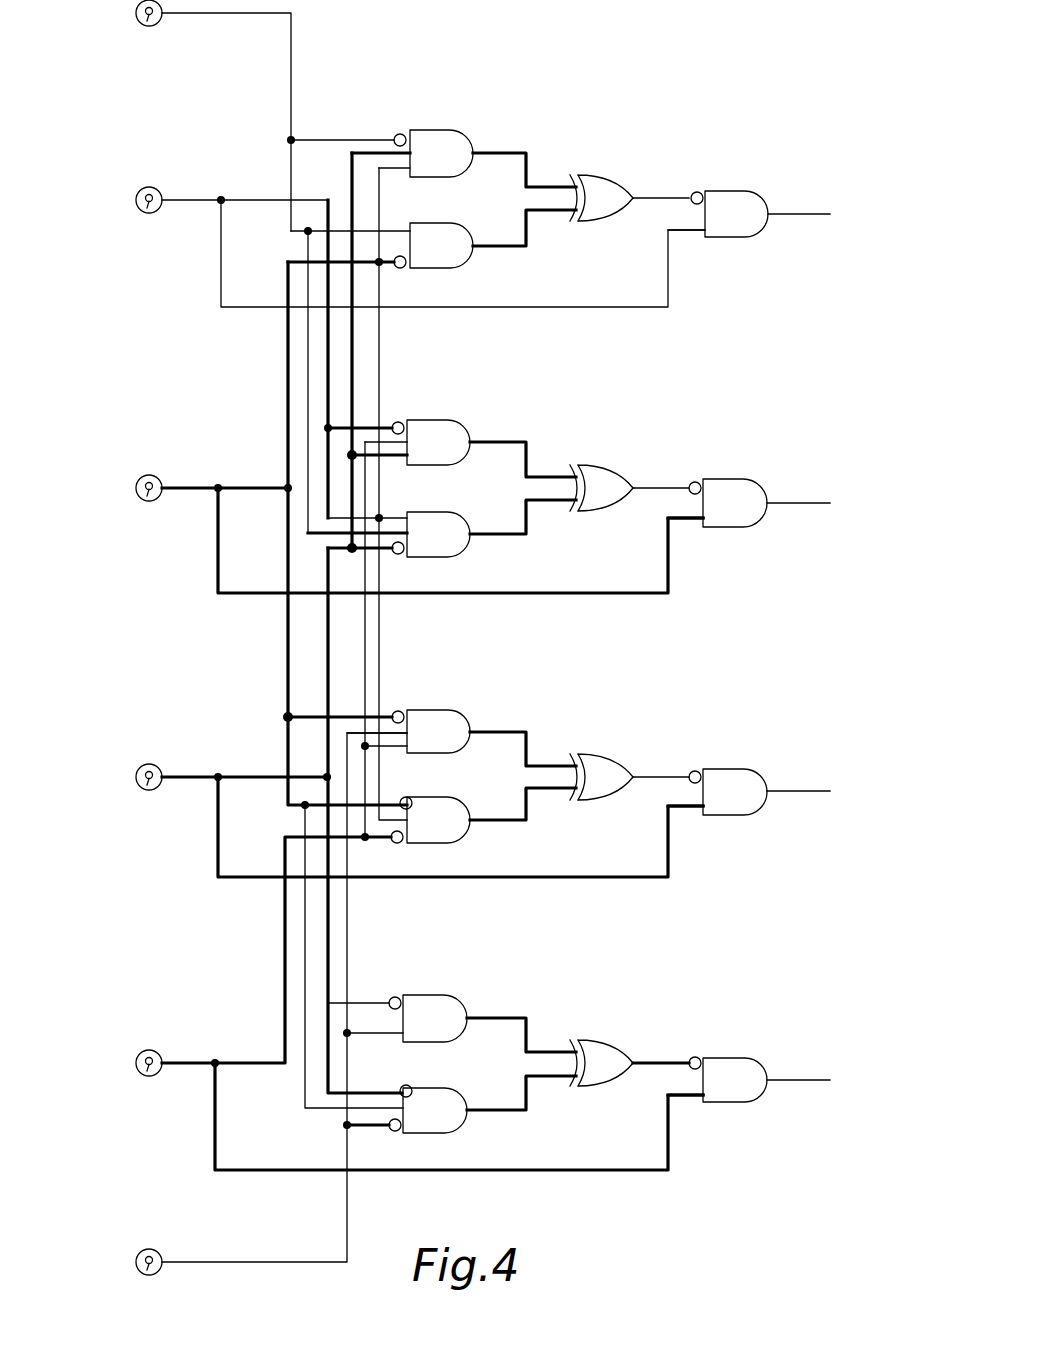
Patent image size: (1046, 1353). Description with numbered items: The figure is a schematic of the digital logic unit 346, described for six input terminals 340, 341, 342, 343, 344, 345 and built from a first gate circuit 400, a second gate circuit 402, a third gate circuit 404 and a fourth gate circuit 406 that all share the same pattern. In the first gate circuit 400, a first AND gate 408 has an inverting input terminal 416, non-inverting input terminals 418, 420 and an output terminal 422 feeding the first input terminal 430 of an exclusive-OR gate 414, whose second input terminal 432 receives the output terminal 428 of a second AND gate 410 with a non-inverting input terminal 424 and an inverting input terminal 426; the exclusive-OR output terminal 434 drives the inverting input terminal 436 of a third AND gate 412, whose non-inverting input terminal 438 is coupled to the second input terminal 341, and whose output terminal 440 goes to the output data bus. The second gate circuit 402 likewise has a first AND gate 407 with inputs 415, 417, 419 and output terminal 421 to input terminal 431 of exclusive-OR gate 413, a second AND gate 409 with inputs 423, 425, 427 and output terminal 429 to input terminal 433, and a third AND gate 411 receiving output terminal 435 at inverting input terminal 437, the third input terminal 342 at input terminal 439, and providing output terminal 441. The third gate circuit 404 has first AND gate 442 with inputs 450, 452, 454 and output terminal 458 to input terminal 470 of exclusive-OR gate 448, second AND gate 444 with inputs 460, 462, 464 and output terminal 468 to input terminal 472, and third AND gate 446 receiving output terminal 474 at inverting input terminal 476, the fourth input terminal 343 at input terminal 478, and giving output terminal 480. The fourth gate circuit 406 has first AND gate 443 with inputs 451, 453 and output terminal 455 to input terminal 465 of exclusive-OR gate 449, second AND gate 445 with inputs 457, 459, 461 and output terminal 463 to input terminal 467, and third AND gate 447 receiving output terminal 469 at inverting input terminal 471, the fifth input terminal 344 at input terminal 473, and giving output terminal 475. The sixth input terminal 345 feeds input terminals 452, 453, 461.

The first input terminal 340 is at (138, 22).
The second input terminal 341 is at (138, 209).
The third input terminal 342 is at (138, 497).
The fourth input terminal 343 is at (138, 786).
The fifth input terminal 344 is at (138, 1072).
The sixth input terminal 345 is at (138, 1271).
The digital logic unit 346 is at (112, 632).
The first gate circuit 400 is at (800, 188).
The second gate circuit 402 is at (802, 475).
The third gate circuit 404 is at (800, 765).
The fourth gate circuit 406 is at (795, 1065).
The first AND gate 407 is at (450, 422).
The first AND gate 408 is at (462, 138).
The second AND gate 409 is at (450, 522).
The second AND gate 410 is at (462, 235).
The third AND gate 411 is at (735, 488).
The third AND gate 412 is at (735, 198).
The exclusive-OR gate 413 is at (605, 482).
The first exclusive-OR gate 414 is at (605, 192).
The first inverting input terminal 415 is at (394, 422).
The first inverting input terminal 416 is at (396, 134).
The second non-inverting input terminal 417 is at (420, 440).
The second non-inverting input terminal 418 is at (422, 148).
The third non-inverting input terminal 419 is at (416, 460).
The third non-inverting input terminal 420 is at (420, 172).
The output terminal 421 is at (475, 440).
The first output terminal 422 is at (473, 160).
The first non-inverting input terminal 423 is at (412, 516).
The first non-inverting input terminal 424 is at (418, 268).
The second non-inverting input terminal 425 is at (412, 555).
The second inverting input terminal 426 is at (398, 270).
The third inverting input terminal 427 is at (398, 556).
The output terminal 428 is at (474, 247).
The output terminal 429 is at (474, 538).
The first input terminal 430 is at (580, 172).
The first input terminal 431 is at (575, 476).
The second input terminal 432 is at (580, 218).
The second input terminal 433 is at (580, 508).
The output terminal 434 is at (630, 205).
The output terminal 435 is at (630, 494).
The first inverting input terminal 436 is at (700, 192).
The first inverting input terminal 437 is at (699, 482).
The second non-inverting input terminal 438 is at (710, 237).
The second non-inverting input terminal 439 is at (710, 526).
The output terminal 440 is at (772, 216).
The output terminal 441 is at (770, 504).
The first AND gate 442 is at (455, 722).
The first AND gate 443 is at (448, 1000).
The second AND gate 444 is at (450, 815).
The second AND gate 445 is at (448, 1108).
The third AND gate 446 is at (738, 780).
The third AND gate 447 is at (738, 1070).
The exclusive-OR gate 448 is at (605, 772).
The exclusive-OR gate 449 is at (605, 1060).
The first inverting input terminal 450 is at (396, 710).
The first inverting input terminal 451 is at (390, 998).
The second non-inverting input terminal 452 is at (424, 728).
The second non-inverting input terminal 453 is at (416, 1040).
The third non-inverting input terminal 454 is at (418, 750).
The output terminal 455 is at (470, 1024).
The first non-inverting input terminal 457 is at (410, 1086).
The output terminal 458 is at (472, 738).
The second non-inverting input terminal 459 is at (410, 1128).
The first non-inverting input terminal 460 is at (412, 797).
The third inverting input terminal 461 is at (395, 1133).
The second non-inverting input terminal 462 is at (414, 833).
The output terminal 463 is at (472, 1113).
The third inverting input terminal 464 is at (398, 845).
The first input terminal 465 is at (575, 1048).
The second input terminal 467 is at (580, 1084).
The output terminal 468 is at (474, 826).
The output terminal 469 is at (630, 1068).
The first input terminal 470 is at (575, 762).
The first inverting input terminal 471 is at (699, 1057).
The second input terminal 472 is at (580, 794).
The second non-inverting input terminal 473 is at (710, 1102).
The output terminal 474 is at (630, 783).
The output terminal 475 is at (770, 1082).
The first inverting input terminal 476 is at (699, 770).
The second non-inverting input terminal 478 is at (710, 815).
The output terminal 480 is at (770, 792).